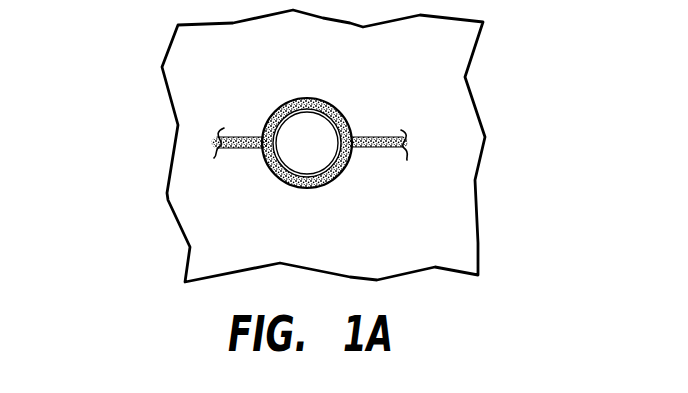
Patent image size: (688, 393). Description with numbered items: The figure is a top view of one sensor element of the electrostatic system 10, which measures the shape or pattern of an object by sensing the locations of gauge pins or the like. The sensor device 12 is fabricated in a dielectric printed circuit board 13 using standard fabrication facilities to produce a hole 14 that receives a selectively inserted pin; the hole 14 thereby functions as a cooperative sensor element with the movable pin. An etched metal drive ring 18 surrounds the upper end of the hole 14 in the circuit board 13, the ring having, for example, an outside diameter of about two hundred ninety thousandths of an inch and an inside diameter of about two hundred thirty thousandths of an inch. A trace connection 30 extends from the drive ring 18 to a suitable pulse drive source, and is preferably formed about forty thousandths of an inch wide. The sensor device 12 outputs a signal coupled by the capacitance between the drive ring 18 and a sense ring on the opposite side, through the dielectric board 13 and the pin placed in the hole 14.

The electrostatic system 10 is at (151, 64).
The sensor device 12 is at (332, 97).
The dielectric printed circuit board 13 is at (457, 45).
The hole 14 is at (300, 114).
The etched metal drive ring 18 is at (350, 124).
The trace connection 30 is at (373, 148).